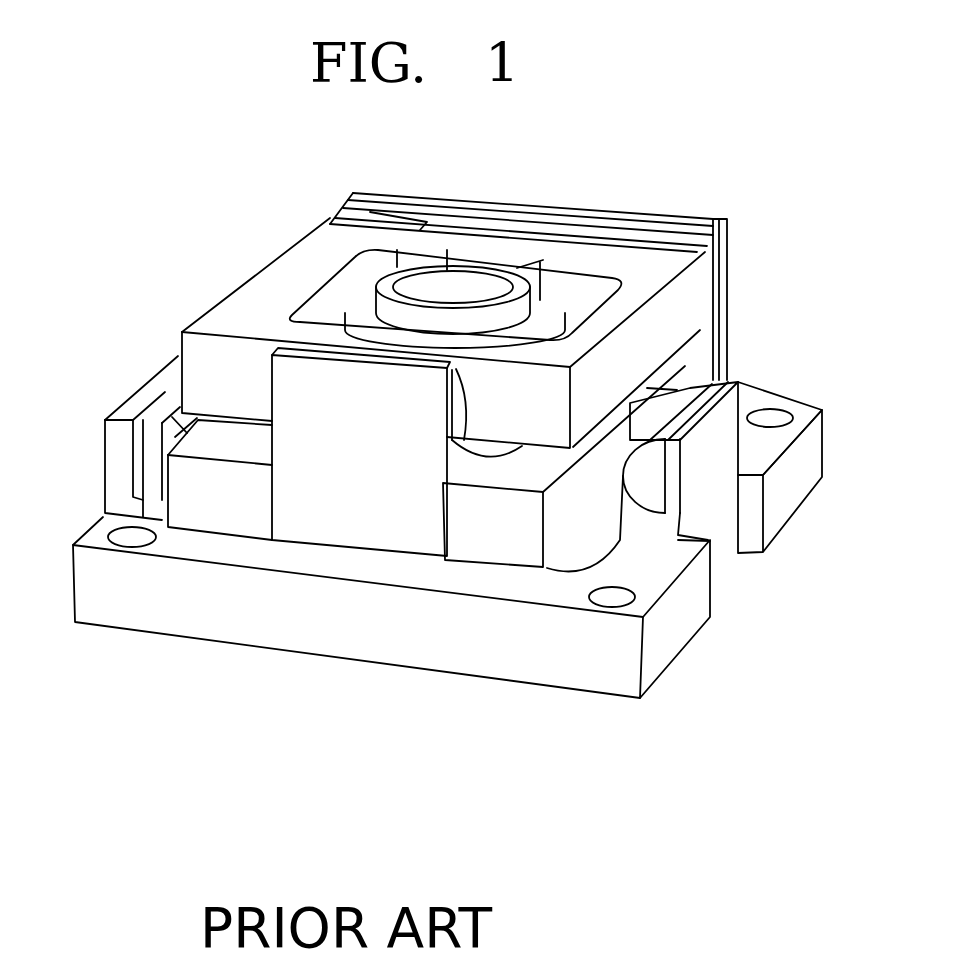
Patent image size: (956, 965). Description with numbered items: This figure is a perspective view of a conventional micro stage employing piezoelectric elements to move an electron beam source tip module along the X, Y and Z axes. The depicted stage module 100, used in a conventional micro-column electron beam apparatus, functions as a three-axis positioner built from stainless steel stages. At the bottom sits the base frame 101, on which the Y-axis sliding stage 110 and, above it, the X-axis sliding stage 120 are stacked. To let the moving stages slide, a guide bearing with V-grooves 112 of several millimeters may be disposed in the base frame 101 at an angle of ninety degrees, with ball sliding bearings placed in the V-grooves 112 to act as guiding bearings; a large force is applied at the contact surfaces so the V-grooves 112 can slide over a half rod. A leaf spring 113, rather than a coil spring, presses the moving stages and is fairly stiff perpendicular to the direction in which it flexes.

The stage module 100 is at (158, 284).
The base frame 101 is at (467, 655).
The Y-axis sliding stage 110 is at (570, 503).
The V-grooves 112 is at (727, 381).
The leaf spring 113 is at (313, 405).
The X-axis sliding stage 120 is at (662, 317).